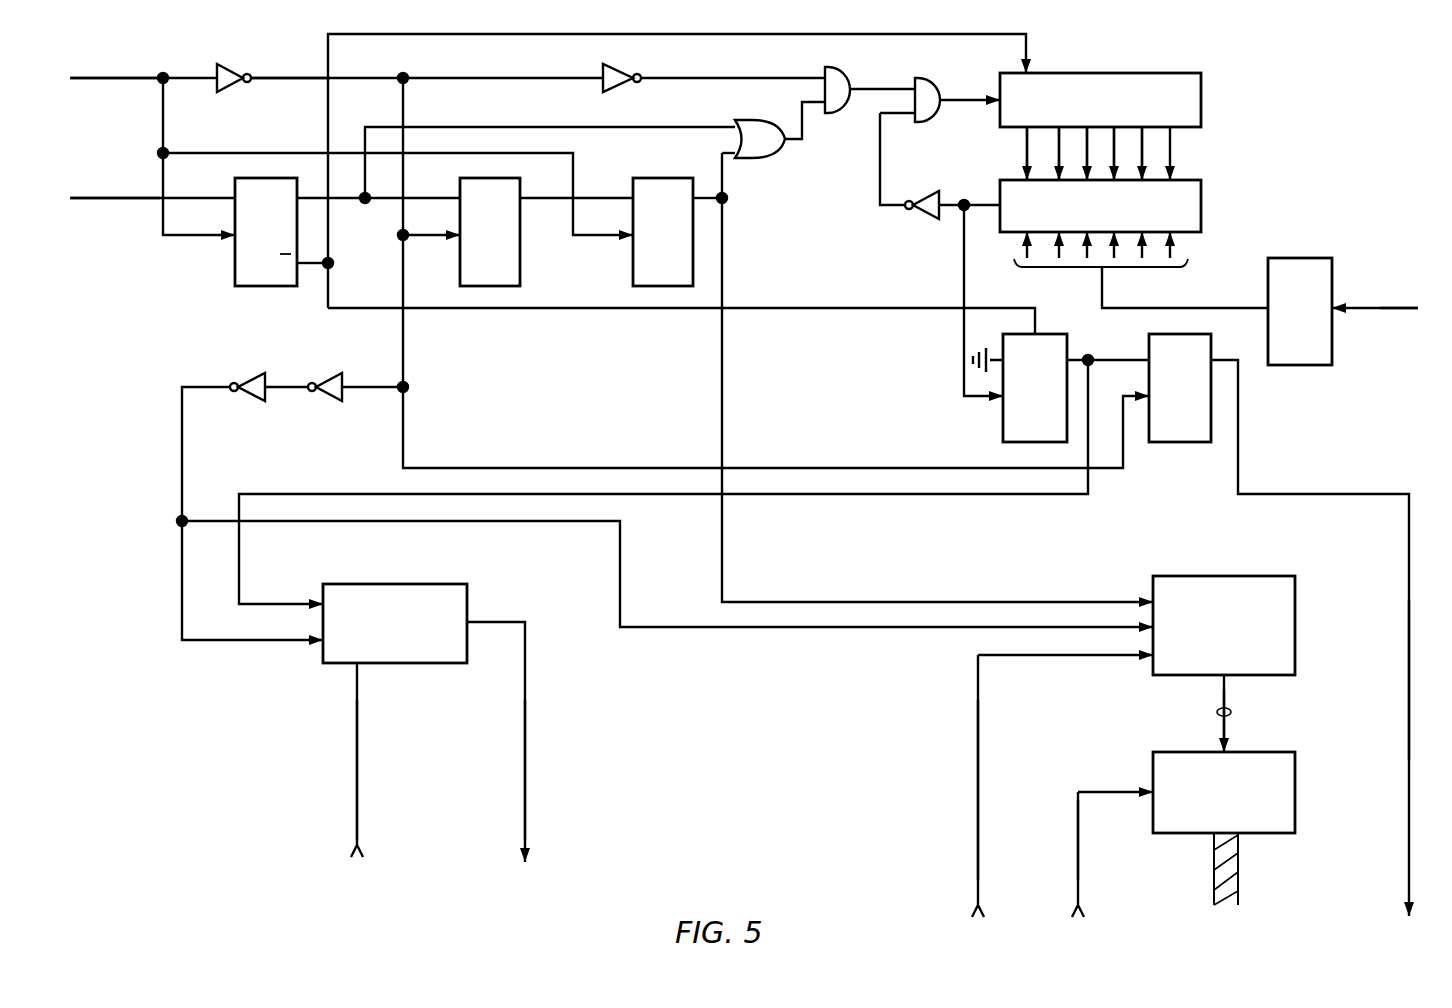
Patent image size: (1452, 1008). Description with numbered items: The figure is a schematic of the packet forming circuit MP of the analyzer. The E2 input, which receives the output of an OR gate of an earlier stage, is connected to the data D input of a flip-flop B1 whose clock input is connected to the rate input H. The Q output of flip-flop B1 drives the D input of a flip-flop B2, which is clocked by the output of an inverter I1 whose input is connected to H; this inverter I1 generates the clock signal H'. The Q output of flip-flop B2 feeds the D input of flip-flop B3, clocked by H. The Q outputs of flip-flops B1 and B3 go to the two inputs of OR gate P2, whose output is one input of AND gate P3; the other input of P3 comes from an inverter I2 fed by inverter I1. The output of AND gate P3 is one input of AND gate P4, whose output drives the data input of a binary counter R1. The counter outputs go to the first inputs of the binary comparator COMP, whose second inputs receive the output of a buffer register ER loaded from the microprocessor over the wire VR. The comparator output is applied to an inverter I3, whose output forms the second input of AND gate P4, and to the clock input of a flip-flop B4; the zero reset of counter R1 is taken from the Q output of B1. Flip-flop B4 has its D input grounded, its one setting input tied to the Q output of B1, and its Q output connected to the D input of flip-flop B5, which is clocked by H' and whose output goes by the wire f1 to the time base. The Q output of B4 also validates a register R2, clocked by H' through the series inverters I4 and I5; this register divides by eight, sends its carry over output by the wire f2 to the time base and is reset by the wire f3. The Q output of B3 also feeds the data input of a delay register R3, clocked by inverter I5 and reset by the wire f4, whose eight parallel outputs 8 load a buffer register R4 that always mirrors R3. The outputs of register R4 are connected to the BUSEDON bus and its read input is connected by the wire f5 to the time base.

The rate input H is at (115, 58).
The clock signal H' is at (290, 58).
The E2 input E2 is at (115, 186).
The inverter I1 is at (230, 90).
The inverter I2 is at (620, 91).
The inverter I3 is at (928, 219).
The inverter I4 is at (326, 401).
The inverter I5 is at (248, 401).
The flip-flop B1 is at (233, 268).
The flip-flop B2 is at (460, 268).
The flip-flop B3 is at (633, 266).
The flip-flop B4 is at (1003, 423).
The flip-flop B5 is at (1172, 442).
The OR gate P2 is at (762, 158).
The AND gate P3 is at (842, 72).
The AND gate P4 is at (926, 122).
The binary counter R1 is at (1201, 96).
The binary comparator COMP is at (1201, 207).
The buffer register ER is at (1333, 280).
The wire VR is at (1375, 307).
The register R2 is at (400, 584).
The delay register R3 is at (1235, 576).
The buffer register R4 is at (1290, 752).
The eight parallel outputs 8 is at (1231, 715).
The BUSEDON bus BUSEDON is at (1238, 875).
The packet forming circuit MP is at (185, 797).
The wire f1 is at (1409, 680).
The wire f2 is at (525, 790).
The wire f3 is at (357, 790).
The wire f4 is at (978, 749).
The wire f5 is at (1078, 856).